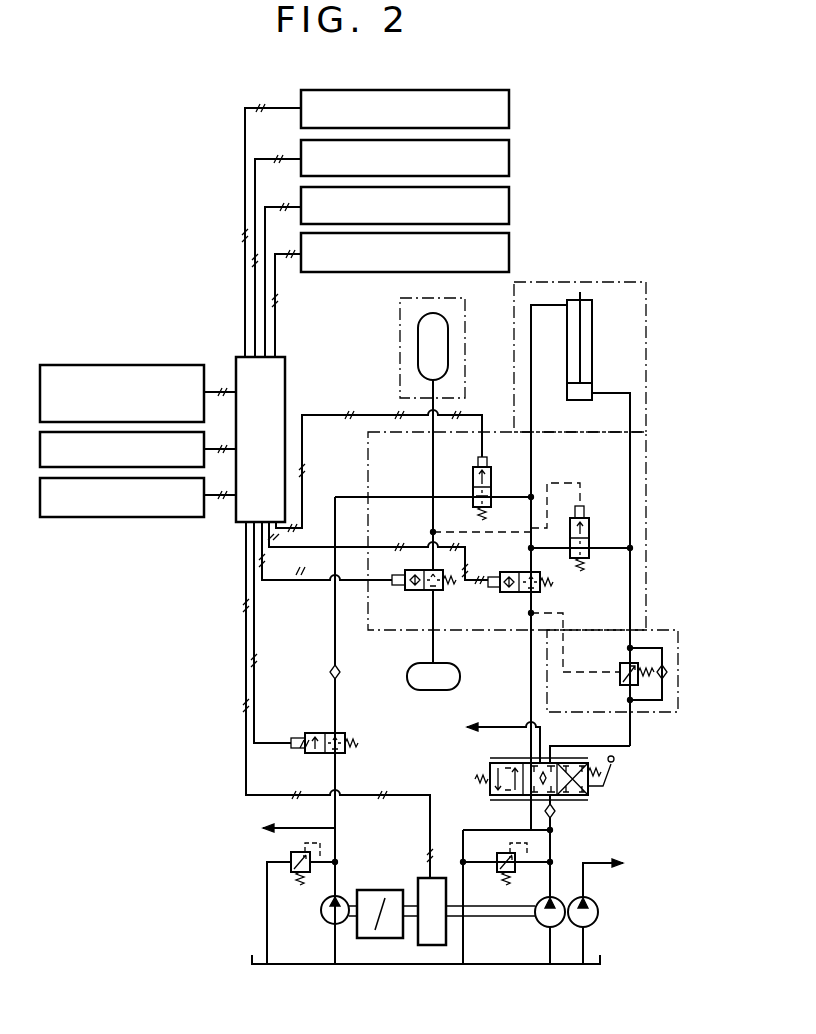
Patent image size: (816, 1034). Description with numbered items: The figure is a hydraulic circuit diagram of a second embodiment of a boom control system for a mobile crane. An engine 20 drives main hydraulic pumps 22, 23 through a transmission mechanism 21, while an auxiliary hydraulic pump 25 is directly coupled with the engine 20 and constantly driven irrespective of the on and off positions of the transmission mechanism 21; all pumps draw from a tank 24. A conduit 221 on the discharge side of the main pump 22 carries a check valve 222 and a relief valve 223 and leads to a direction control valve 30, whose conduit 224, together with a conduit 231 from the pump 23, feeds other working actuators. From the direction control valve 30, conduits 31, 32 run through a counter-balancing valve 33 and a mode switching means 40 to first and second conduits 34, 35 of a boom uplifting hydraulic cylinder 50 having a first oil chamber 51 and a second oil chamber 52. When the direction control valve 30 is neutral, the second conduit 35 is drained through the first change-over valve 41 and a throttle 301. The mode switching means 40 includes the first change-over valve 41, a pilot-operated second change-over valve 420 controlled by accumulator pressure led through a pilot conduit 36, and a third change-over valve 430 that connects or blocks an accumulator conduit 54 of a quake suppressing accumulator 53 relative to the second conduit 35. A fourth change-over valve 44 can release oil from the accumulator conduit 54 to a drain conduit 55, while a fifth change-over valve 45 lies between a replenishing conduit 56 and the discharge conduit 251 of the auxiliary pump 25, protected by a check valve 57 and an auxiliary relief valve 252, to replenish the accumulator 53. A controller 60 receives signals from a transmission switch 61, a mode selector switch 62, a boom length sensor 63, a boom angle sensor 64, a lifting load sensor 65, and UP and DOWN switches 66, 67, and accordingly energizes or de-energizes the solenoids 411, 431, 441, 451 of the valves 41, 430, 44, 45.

The engine 20 is at (375, 938).
The transmission mechanism 21 is at (420, 945).
The main hydraulic pump 22 is at (543, 924).
The main hydraulic pump 23 is at (616, 911).
The tank 24 is at (600, 963).
The auxiliary hydraulic pump 25 is at (321, 910).
The direction control valve 30 is at (541, 784).
The conduit 31 is at (630, 742).
The conduit 32 is at (531, 670).
The counter-balancing valve 33 is at (670, 630).
The first conduit 34 is at (630, 472).
The second conduit 35 is at (531, 466).
The pilot conduit 36 is at (548, 482).
The mode switching means 40 is at (646, 548).
The first change-over valve 41 is at (504, 583).
The fourth change-over valve 44 is at (414, 591).
The fifth change-over valve 45 is at (307, 744).
The boom uplifting hydraulic cylinder 50 is at (646, 282).
The first oil chamber 51 is at (566, 393).
The second oil chamber 52 is at (586, 322).
The quake suppressing accumulator 53 is at (400, 320).
The accumulator conduit 54 is at (433, 474).
The drain conduit 55 is at (433, 648).
The replenishing conduit 56 is at (335, 616).
The check valve 57 is at (332, 666).
The controller 60 is at (236, 357).
The transmission switch 61 is at (512, 108).
The mode selector switch 62 is at (173, 366).
The boom length sensor 63 is at (509, 158).
The boom angle sensor 64 is at (509, 207).
The lifting load sensor 65 is at (509, 254).
The UP switch 66 is at (210, 452).
The DOWN switch 67 is at (172, 518).
The conduit 221 is at (550, 851).
The check valve 222 is at (570, 816).
The relief valve 223 is at (497, 873).
The conduit 224 is at (491, 727).
The conduit 231 is at (606, 873).
The discharge conduit 251 is at (335, 840).
The auxiliary relief valve 252 is at (291, 855).
The throttle 301 is at (494, 776).
The solenoid 411 is at (494, 558).
The second change-over valve 420 is at (582, 506).
The third change-over valve 430 is at (482, 477).
The solenoid 431 is at (462, 454).
The solenoid 441 is at (399, 566).
The solenoid 451 is at (292, 750).